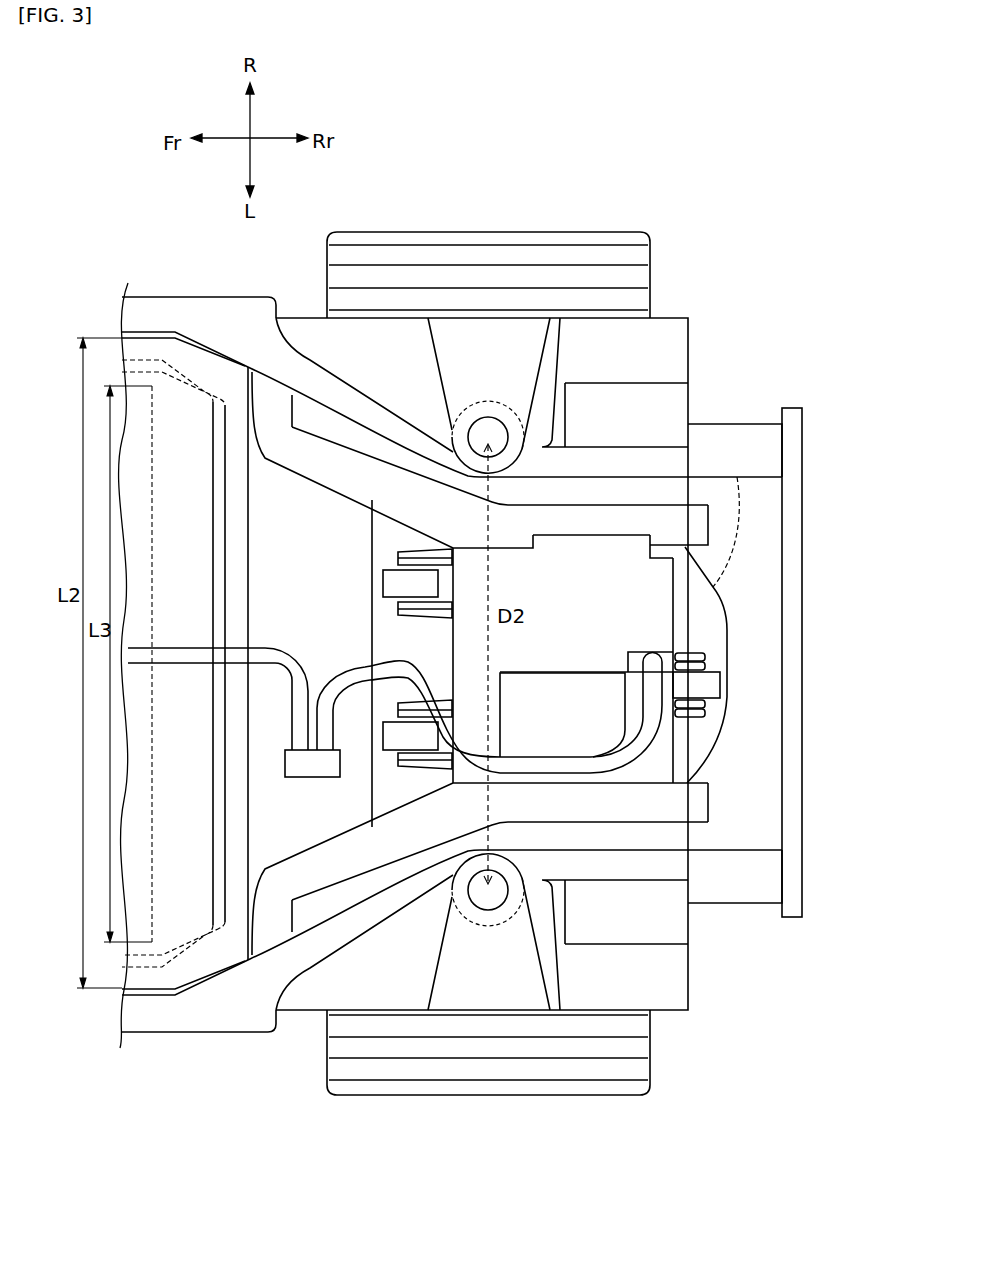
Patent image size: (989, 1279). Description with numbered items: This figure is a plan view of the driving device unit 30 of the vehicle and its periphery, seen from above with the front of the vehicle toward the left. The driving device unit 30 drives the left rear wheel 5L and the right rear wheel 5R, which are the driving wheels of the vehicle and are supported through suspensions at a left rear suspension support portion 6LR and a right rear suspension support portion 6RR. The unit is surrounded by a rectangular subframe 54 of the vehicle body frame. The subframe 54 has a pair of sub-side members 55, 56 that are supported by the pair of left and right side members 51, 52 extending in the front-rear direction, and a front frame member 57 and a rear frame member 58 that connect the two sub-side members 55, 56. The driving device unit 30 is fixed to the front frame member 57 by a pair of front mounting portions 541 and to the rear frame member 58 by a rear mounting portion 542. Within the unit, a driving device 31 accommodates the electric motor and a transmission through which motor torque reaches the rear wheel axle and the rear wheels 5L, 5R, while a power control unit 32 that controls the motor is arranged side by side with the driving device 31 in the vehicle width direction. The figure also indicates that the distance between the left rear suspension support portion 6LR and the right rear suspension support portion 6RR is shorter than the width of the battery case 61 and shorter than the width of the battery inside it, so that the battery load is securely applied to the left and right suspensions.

The right rear wheel 5R is at (654, 257).
The left rear wheel 5L is at (654, 1046).
The right rear suspension support portion 6RR is at (488, 425).
The left rear suspension support portion 6LR is at (482, 902).
The driving device unit 30 is at (663, 665).
The driving device 31 is at (675, 740).
The Power Control Unit (PCU) 32 is at (675, 620).
The side member 51 is at (200, 297).
The side member 52 is at (150, 1032).
The subframe 54 is at (730, 594).
The front mounting portion 541 is at (380, 583).
The rear mounting portion 542 is at (722, 685).
The sub-side member 55 is at (625, 503).
The sub-side member 56 is at (667, 823).
The front frame member 57 is at (370, 812).
The rear frame member 58 is at (737, 477).
The battery case 61 is at (192, 982).